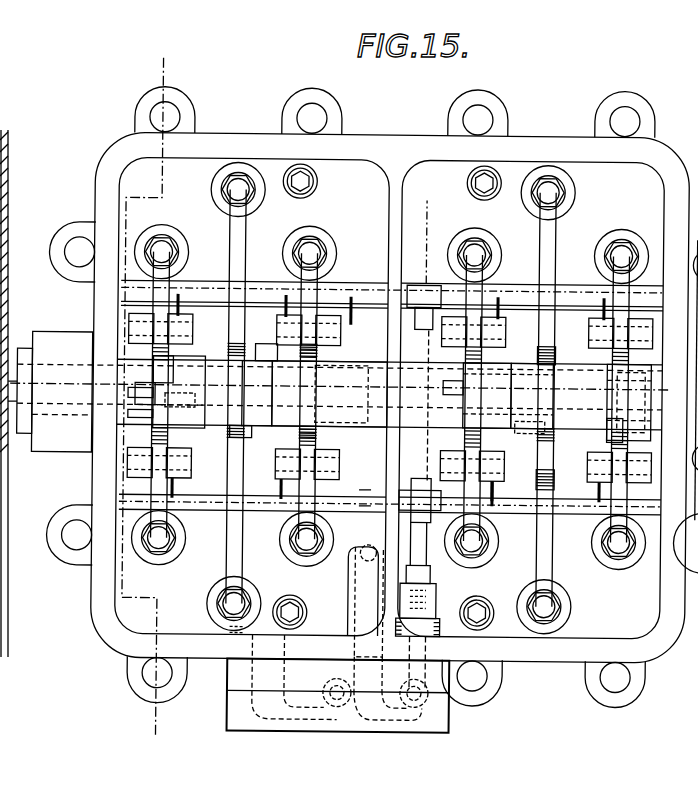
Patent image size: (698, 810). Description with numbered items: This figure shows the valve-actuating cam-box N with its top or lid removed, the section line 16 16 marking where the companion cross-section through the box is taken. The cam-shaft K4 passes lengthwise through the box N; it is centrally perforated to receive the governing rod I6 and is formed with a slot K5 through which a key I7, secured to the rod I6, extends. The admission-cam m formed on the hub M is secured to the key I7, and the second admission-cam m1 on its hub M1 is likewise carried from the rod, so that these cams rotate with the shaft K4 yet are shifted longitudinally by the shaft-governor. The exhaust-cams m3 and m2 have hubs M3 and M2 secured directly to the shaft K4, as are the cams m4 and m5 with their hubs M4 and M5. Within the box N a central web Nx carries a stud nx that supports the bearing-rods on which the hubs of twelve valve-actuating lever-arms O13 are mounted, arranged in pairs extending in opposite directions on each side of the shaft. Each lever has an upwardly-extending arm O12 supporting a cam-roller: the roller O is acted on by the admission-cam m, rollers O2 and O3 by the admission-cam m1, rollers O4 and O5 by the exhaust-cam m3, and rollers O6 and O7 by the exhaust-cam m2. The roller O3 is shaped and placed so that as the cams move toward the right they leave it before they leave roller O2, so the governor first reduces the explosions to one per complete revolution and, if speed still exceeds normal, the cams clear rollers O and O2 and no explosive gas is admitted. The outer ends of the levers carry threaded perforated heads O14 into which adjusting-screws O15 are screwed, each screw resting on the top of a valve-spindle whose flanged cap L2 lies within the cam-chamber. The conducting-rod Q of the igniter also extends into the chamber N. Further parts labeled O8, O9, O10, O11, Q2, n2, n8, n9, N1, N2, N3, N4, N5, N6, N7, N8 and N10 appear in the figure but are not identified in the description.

The section line 16 is at (148, 393).
The cam-box N is at (686, 227).
The governing rod I6 is at (20, 397).
The cam-shaft K4 is at (130, 366).
The slot K5 is at (128, 428).
The flanged cap L2 is at (170, 246).
The cam-roller O is at (160, 300).
The cam-roller O2 is at (620, 341).
The cam-roller O3 is at (619, 457).
The cam-roller O4 is at (308, 338).
The cam-roller O5 is at (307, 454).
The cam-roller O6 is at (473, 340).
The cam-roller O7 is at (472, 456).
The tappet pin O8 is at (250, 345).
The tappet pin O9 is at (238, 462).
The tappet block O10 is at (540, 336).
The tappet block O11 is at (548, 462).
The upwardly-extending arm O12 is at (185, 322).
The valve-actuating lever-arm O13 is at (180, 283).
The perforated head O14 is at (178, 255).
The adjusting-screw O15 is at (158, 250).
The admission-cam hub M is at (179, 392).
The admission-cam hub M1 is at (695, 332).
The exhaust-cam hub M2 is at (330, 394).
The exhaust-cam hub M3 is at (487, 395).
The cam hub M4 is at (251, 389).
The cam hub M5 is at (532, 395).
The admission-cam m is at (160, 368).
The admission-cam m1 is at (608, 426).
The exhaust-cam m2 is at (300, 366).
The exhaust-cam m3 is at (460, 376).
The cam m4 is at (240, 410).
The cam m5 is at (529, 418).
The key I7 is at (185, 400).
The conducting-rod Q is at (300, 612).
The plug nuts Q2 is at (300, 184).
The central web Nx is at (400, 254).
The stud nx is at (440, 285).
The pin n9 is at (352, 316).
The cross valve and stem N7 is at (425, 310).
The pin n8 is at (506, 484).
The stop pin N8 is at (498, 515).
The valve housing N10 is at (362, 546).
The passage N4 is at (350, 565).
The base plate N1 is at (450, 700).
The passage N2 is at (250, 668).
The port N3 is at (328, 688).
The passage N5 is at (380, 722).
The port N6 is at (430, 680).
The pin n2 is at (251, 619).